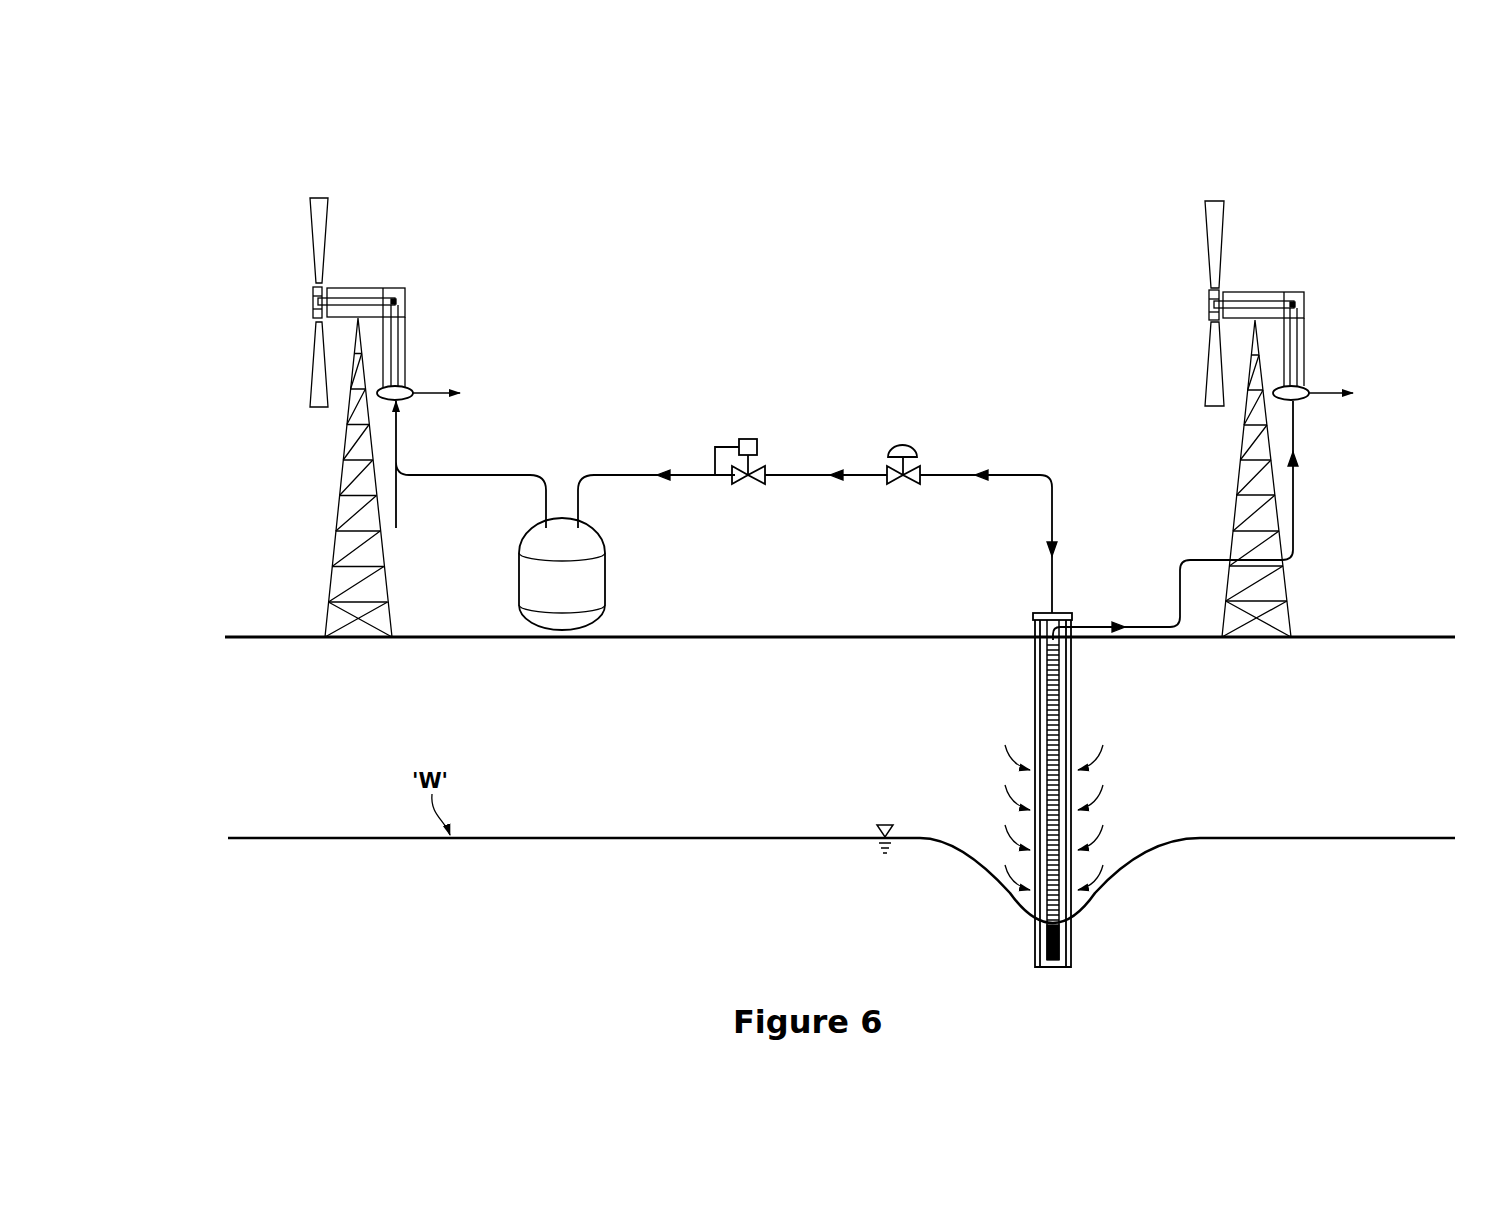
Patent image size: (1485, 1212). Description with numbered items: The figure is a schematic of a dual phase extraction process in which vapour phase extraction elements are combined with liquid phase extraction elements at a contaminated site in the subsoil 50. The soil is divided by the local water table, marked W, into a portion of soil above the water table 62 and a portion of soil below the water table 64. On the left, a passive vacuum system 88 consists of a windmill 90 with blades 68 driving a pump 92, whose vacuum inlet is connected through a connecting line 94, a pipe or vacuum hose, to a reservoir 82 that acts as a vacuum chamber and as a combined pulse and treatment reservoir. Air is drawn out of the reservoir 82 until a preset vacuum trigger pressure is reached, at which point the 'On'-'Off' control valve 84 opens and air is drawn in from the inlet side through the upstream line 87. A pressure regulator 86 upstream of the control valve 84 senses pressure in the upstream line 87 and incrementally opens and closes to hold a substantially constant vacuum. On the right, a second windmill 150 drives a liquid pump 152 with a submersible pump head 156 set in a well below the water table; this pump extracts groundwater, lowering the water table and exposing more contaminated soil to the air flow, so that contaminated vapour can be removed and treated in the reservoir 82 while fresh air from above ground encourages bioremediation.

The subsoil 50 is at (283, 663).
The portion of soil above the water table 62 is at (658, 765).
The portion of soil below the water table 64 is at (675, 897).
The blades 68 is at (1202, 233).
The reservoir 82 is at (607, 599).
The control valve 84 is at (748, 436).
The pressure regulator 86 is at (903, 443).
The upstream line 87 is at (951, 472).
The passive vacuum system 88 is at (363, 206).
The windmill 90 is at (368, 286).
The pump 92 is at (410, 382).
The connecting line 94 is at (463, 481).
The windmill 150 is at (1264, 290).
The liquid pump 152 is at (1306, 385).
The submersible pump head 156 is at (1020, 611).